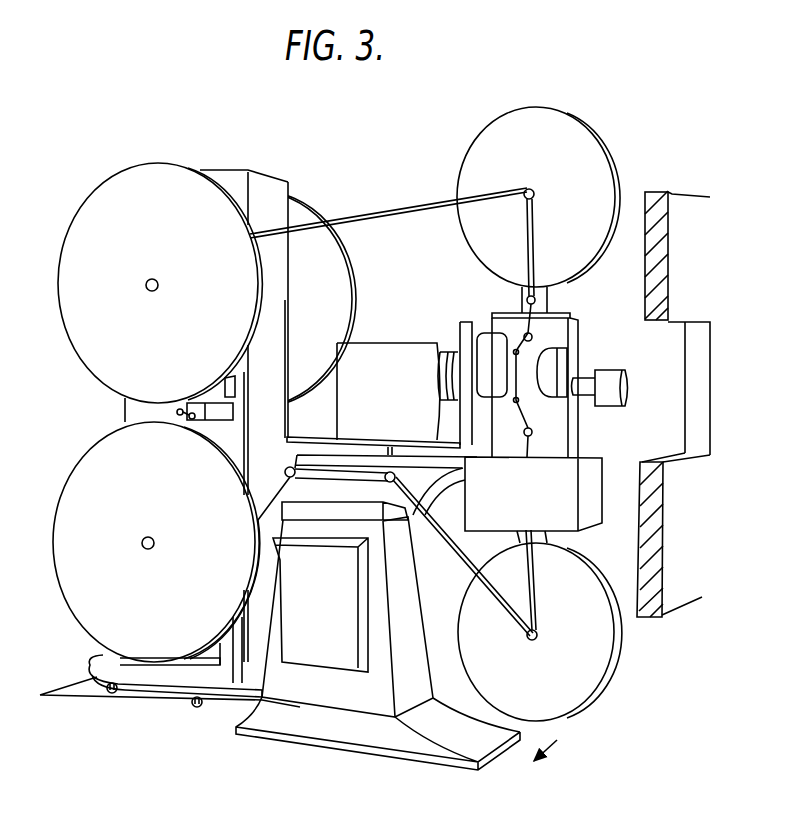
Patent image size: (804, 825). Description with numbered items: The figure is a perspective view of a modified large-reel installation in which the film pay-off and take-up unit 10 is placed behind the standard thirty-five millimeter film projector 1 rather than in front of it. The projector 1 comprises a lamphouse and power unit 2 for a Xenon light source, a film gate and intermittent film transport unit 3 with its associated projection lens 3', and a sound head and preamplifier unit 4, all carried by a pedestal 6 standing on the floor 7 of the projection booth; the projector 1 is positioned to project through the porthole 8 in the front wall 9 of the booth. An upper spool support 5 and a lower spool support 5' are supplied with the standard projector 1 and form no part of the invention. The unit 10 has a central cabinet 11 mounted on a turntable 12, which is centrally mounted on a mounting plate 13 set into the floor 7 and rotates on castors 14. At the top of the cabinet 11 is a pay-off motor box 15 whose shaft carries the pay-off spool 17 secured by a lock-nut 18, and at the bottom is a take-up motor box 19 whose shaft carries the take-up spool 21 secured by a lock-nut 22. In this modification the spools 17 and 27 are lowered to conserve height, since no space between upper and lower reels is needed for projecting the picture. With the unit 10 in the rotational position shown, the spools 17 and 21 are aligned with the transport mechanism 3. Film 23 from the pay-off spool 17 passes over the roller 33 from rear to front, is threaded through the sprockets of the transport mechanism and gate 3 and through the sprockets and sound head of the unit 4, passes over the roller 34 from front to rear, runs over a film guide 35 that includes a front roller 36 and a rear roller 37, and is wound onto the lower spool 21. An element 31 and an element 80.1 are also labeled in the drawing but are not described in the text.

The film projector 1 is at (440, 290).
The lamphouse and power unit 2 is at (393, 343).
The film gate and intermittent film transport unit 3 is at (529, 372).
The projection lens 3' is at (600, 372).
The sound head and preamplifier unit 4 is at (602, 476).
The upper spool support 5 is at (545, 210).
The lower spool support 5' is at (542, 632).
The pedestal 6 is at (417, 651).
The floor 7 is at (555, 741).
The porthole 8 is at (665, 387).
The front wall 9 is at (692, 297).
The film pay-off and take-up unit 10 is at (207, 153).
The central cabinet 11 is at (234, 180).
The turntable 12 is at (102, 658).
The mounting plate 13 is at (73, 688).
The castors 14 is at (187, 708).
The pay-off motor box 15 is at (227, 386).
The pay-off spool 17 is at (122, 178).
The lock-nut 18 is at (158, 291).
The take-up motor box 19 is at (222, 657).
The take-up spool 21 is at (78, 608).
The lock-nut 22 is at (153, 548).
The film 23 is at (417, 206).
The spool 27 is at (310, 217).
The base plate of head unit 31 is at (289, 440).
The roller 33 is at (533, 189).
The roller 34 is at (538, 638).
The film guide 35 is at (367, 468).
The front roller 36 is at (392, 483).
The rear roller 37 is at (285, 472).
The tape sensing element 80.1 is at (160, 410).